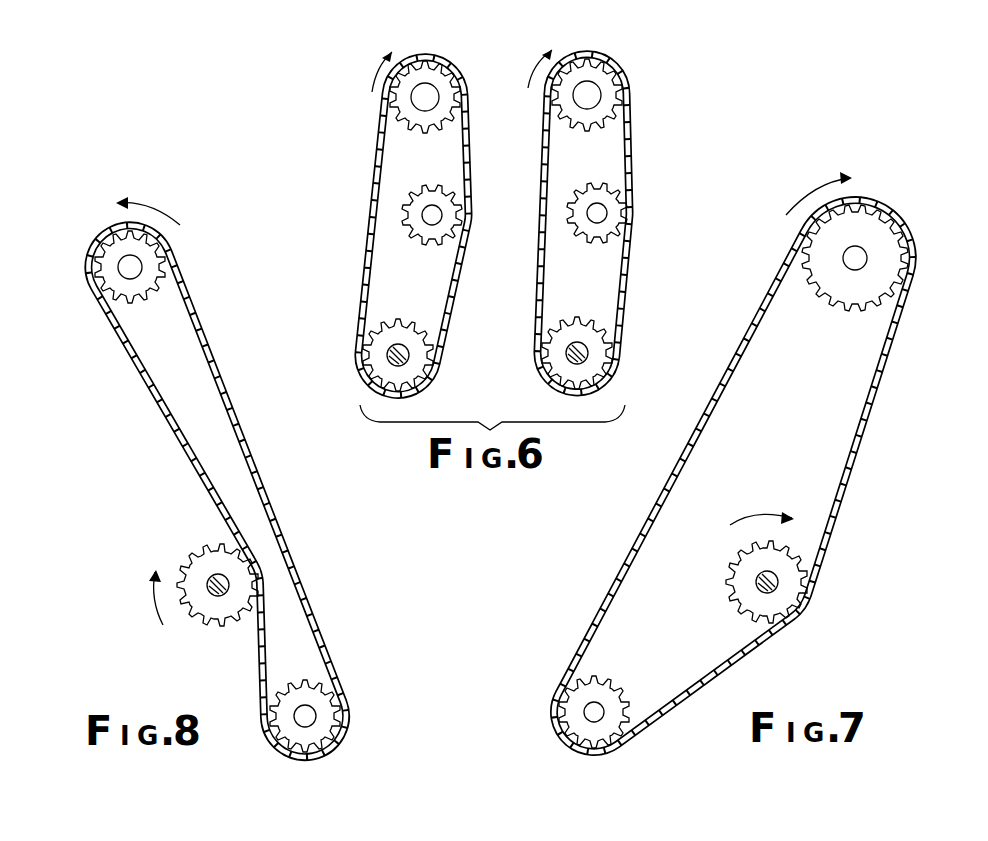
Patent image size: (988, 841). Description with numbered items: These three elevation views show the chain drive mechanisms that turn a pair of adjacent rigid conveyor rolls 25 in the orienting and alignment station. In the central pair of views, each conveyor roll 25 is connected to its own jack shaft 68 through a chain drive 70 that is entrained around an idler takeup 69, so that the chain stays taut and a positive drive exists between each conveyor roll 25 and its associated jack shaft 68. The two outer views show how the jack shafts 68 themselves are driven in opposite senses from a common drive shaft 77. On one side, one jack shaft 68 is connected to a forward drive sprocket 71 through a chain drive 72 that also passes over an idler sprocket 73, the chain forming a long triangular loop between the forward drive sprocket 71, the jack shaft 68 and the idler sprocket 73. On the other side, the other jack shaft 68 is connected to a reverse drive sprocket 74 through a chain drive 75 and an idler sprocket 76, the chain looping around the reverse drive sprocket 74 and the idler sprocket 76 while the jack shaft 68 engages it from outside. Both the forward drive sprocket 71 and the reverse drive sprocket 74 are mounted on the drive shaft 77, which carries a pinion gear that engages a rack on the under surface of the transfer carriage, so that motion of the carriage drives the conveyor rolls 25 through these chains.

In FIG. 6, the conveyor roll 25 is at (428, 93).
In FIG. 6, the jack shaft 68 is at (397, 350).
In FIG. 7, the jack shaft 68 is at (765, 582).
In FIG. 8, the jack shaft 68 is at (217, 584).
In FIG. 6, the idler takeup 69 is at (431, 218).
In FIG. 6, the chain drive 70 is at (380, 176).
In FIG. 7, the forward drive sprocket 71 is at (870, 230).
In FIG. 7, the chain drive 72 is at (700, 452).
In FIG. 7, the idler sprocket 73 is at (596, 711).
In FIG. 8, the reverse drive sprocket 74 is at (108, 251).
In FIG. 8, the chain drive 75 is at (172, 430).
In FIG. 8, the idler sprocket 76 is at (303, 713).
In FIG. 7, the drive shaft 77 is at (855, 262).
In FIG. 8, the drive shaft 77 is at (131, 272).